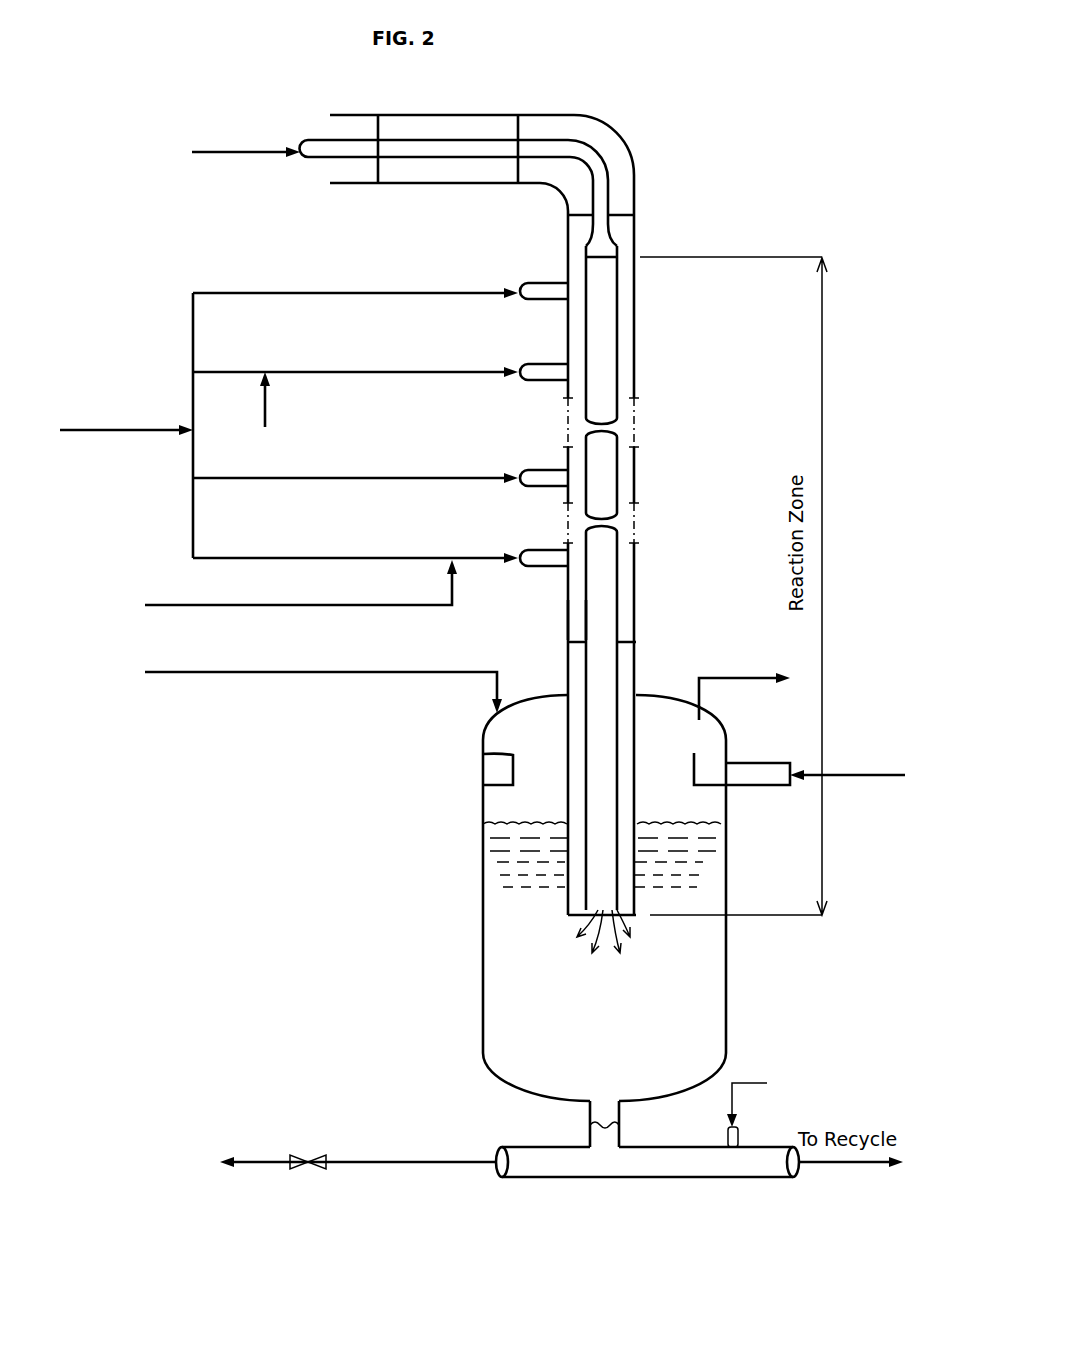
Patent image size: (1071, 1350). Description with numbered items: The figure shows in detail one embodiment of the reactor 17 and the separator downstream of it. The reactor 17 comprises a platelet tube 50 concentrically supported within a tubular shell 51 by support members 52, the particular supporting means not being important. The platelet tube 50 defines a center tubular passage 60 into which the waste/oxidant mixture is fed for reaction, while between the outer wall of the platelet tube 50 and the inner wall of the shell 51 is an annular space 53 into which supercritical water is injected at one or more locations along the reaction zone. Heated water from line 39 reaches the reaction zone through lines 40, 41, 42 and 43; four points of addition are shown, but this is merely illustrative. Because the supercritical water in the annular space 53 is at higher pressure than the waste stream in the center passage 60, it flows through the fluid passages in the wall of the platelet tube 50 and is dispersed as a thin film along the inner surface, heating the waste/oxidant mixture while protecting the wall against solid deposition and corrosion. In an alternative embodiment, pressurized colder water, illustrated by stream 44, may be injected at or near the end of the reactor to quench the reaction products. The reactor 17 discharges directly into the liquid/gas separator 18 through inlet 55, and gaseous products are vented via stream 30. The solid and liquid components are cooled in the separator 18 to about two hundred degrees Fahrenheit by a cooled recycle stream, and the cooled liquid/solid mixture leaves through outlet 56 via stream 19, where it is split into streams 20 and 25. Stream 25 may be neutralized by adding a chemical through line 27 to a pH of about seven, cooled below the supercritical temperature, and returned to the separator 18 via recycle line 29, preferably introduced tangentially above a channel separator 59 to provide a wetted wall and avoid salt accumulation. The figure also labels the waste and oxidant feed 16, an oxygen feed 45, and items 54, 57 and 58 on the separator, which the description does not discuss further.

The waste and oxidant feed line 16 is at (213, 152).
The reactor 17 is at (650, 134).
The liquid/gas separator 18 is at (460, 845).
The stream 19 is at (600, 1135).
The stream 20 is at (403, 1164).
The stream 25 is at (655, 1163).
The line 27 is at (762, 1082).
The recycle line 29 is at (852, 778).
The stream 30 is at (728, 683).
The line 39 is at (82, 431).
The line 40 is at (345, 557).
The line 41 is at (345, 477).
The line 42 is at (345, 371).
The line 43 is at (345, 292).
The stream 44 is at (280, 612).
The oxygen feed line 45 is at (265, 405).
The platelet tube 50 is at (664, 328).
The tubular shell 51 is at (666, 378).
The support members 52 is at (517, 118).
The annular space 53 is at (583, 238).
The vessel wall 54 is at (727, 1005).
The inlet 55 is at (648, 697).
The outlet 56 is at (605, 1108).
The recycle inlet port 57 is at (735, 788).
The quench inlet line 58 is at (292, 676).
The channel separator 59 is at (483, 755).
The center tubular passage 60 is at (590, 319).